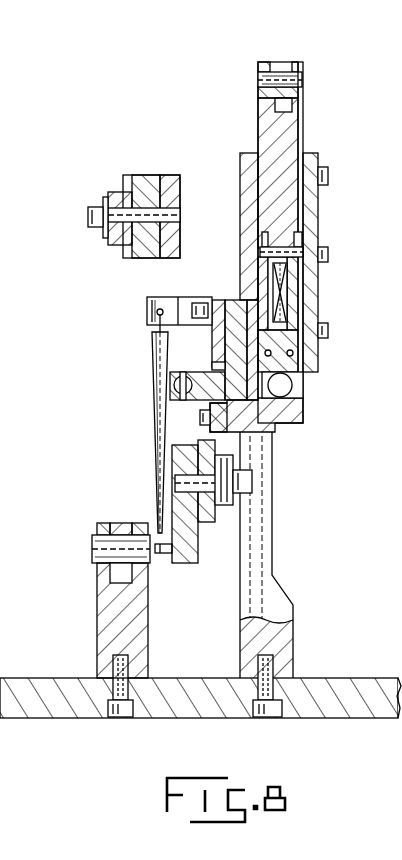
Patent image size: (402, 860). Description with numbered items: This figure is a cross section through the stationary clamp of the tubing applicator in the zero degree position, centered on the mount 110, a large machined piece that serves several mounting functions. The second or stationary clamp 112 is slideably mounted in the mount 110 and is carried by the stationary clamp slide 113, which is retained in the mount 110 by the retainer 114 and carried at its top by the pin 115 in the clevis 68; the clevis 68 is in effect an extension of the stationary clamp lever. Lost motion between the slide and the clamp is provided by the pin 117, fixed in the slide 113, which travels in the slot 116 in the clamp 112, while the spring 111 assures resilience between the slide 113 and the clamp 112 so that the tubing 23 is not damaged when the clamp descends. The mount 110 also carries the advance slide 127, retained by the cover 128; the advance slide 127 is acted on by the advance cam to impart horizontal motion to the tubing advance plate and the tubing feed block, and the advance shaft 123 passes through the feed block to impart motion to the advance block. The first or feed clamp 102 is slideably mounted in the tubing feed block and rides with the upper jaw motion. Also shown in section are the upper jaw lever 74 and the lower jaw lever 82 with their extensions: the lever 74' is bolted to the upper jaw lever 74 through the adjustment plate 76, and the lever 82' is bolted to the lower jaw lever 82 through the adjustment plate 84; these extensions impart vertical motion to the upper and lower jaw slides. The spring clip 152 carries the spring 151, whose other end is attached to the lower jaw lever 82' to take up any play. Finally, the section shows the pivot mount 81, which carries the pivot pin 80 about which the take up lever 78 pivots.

The clevis 68 is at (277, 62).
The pin 115 is at (300, 80).
The stationary clamp slide 113 is at (303, 117).
The mount 110 is at (250, 153).
The upper jaw lever 74 is at (124, 183).
The adjustment plate 76 is at (148, 175).
The lever 74' is at (165, 212).
The pin 117 is at (265, 240).
The spring 111 is at (278, 290).
The slot 116 is at (302, 243).
The retainer 114 is at (314, 290).
The feed clamp 102 is at (296, 310).
The stationary clamp 112 is at (302, 357).
The tubing 23 is at (288, 385).
The cover 128 is at (218, 303).
The spring clip 152 is at (147, 313).
The spring 151 is at (153, 405).
The advance shaft 123 is at (170, 378).
The advance slide 127 is at (208, 387).
The lever 82' is at (184, 524).
The adjustment plate 84 is at (200, 527).
The lower jaw lever 82 is at (252, 490).
The take up lever 78 is at (122, 523).
The pivot pin 80 is at (93, 553).
The pivot mount 81 is at (97, 622).